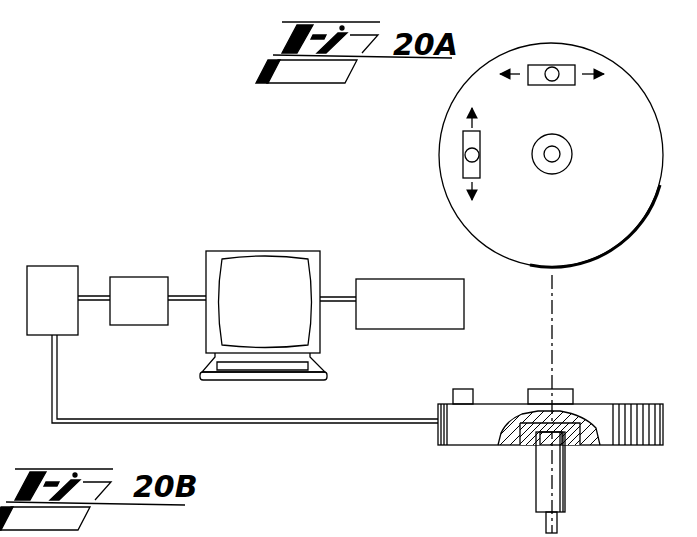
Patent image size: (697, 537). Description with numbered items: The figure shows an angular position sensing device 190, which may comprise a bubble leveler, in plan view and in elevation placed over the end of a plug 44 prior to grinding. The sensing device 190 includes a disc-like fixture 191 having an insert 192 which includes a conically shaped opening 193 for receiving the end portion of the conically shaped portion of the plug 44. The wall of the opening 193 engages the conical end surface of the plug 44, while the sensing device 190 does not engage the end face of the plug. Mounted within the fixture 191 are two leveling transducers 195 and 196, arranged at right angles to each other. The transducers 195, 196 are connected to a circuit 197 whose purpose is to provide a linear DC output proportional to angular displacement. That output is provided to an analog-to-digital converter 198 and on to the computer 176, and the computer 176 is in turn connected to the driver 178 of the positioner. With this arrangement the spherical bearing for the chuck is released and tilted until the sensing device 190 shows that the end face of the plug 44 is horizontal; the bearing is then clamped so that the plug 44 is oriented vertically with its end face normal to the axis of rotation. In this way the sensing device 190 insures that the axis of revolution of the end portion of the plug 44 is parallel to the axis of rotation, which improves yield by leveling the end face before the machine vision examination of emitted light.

In FIG. 20B, the plug 44 is at (555, 480).
In FIG. 20B, the computer 176 is at (250, 251).
In FIG. 20B, the driver 178 is at (380, 279).
In FIG. 20A, the angular position sensing device 190 is at (440, 110).
In FIG. 20B, the angular position sensing device 190 is at (594, 376).
In FIG. 20B, the disc-like fixture 191 is at (447, 445).
In FIG. 20B, the insert 192 is at (527, 445).
In FIG. 20B, the conically shaped opening 193 is at (545, 447).
In FIG. 20A, the leveling transducer 195 is at (463, 173).
In FIG. 20A, the leveling transducer 196 is at (578, 84).
In FIG. 20B, the circuit 197 is at (52, 266).
In FIG. 20B, the analog-to-digital converter 198 is at (128, 277).